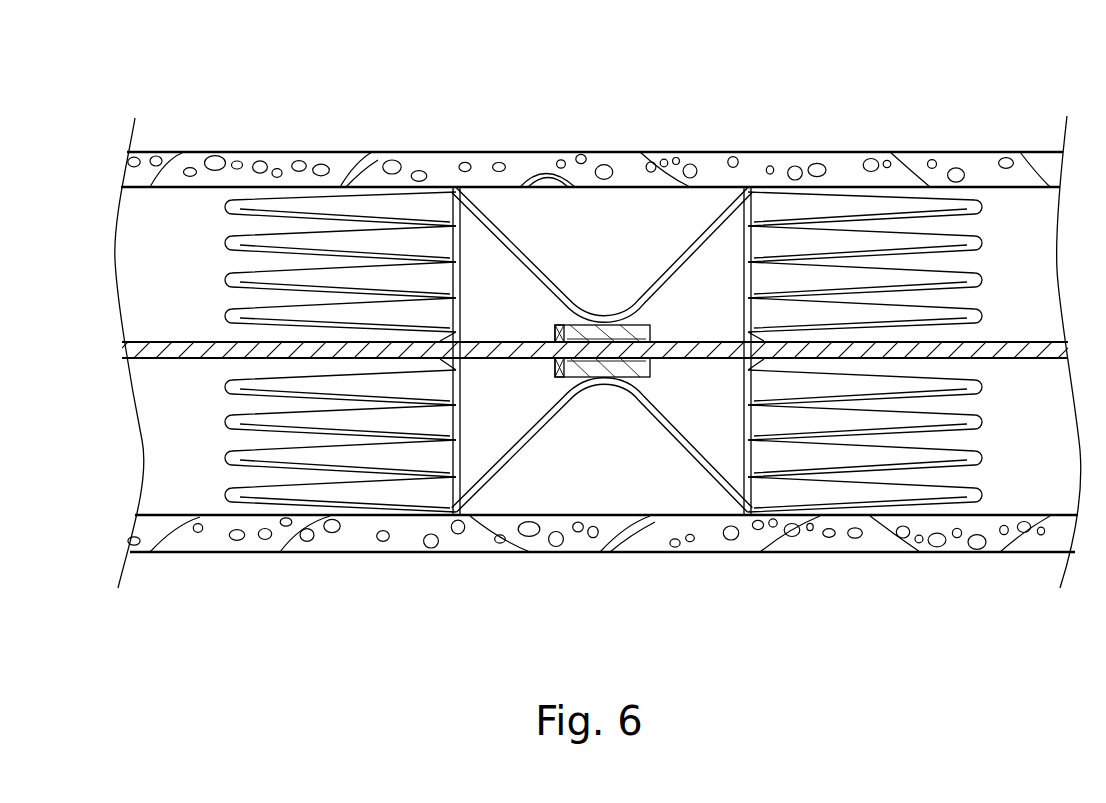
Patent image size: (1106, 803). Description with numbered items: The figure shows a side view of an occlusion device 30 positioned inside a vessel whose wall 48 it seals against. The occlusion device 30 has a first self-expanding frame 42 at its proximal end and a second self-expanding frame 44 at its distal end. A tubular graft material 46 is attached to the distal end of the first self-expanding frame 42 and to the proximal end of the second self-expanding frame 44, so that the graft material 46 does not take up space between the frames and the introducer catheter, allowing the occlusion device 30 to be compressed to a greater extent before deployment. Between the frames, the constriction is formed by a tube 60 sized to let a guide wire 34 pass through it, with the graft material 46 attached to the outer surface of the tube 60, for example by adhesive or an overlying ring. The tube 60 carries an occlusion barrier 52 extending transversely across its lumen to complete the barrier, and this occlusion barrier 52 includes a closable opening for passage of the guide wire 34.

The occlusion device 30 is at (190, 254).
The guide wire 34 is at (177, 360).
The first self-expanding frame 42 is at (838, 432).
The second self-expanding frame 44 is at (322, 430).
The graft material 46 is at (667, 257).
The wall 48 is at (330, 152).
The occlusion barrier 52 is at (563, 323).
The tube 60 is at (640, 380).